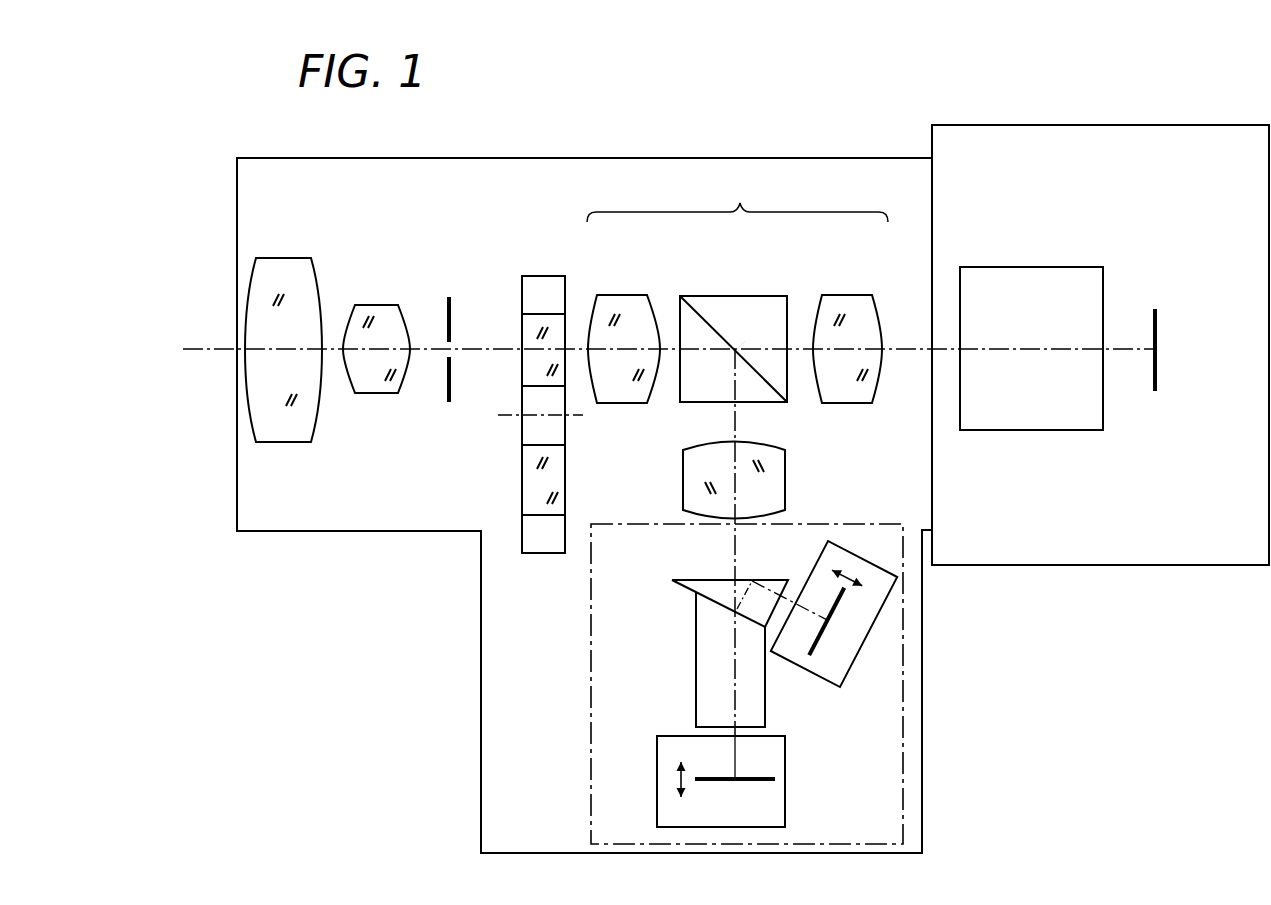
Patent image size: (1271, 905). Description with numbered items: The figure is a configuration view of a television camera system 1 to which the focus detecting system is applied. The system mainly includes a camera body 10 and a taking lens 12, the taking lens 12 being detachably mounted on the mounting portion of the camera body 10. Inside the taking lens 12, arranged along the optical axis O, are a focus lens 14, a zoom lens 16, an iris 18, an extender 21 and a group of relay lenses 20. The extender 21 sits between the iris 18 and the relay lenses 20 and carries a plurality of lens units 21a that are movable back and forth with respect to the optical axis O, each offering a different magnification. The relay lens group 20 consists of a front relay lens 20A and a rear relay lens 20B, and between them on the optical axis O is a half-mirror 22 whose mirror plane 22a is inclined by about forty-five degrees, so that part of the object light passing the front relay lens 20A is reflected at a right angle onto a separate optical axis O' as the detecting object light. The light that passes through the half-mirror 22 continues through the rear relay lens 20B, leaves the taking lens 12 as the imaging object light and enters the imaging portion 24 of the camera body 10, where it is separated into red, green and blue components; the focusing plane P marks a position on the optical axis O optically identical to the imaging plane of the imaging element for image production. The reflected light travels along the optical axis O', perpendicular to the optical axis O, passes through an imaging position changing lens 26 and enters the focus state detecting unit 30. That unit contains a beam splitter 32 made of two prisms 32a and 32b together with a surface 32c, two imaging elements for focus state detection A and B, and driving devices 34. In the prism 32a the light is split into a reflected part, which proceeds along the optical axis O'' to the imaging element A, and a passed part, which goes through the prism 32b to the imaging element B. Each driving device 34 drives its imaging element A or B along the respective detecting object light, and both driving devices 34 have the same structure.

The television camera system 1 is at (842, 120).
The camera body 10 is at (1105, 125).
The taking lens 12 is at (612, 158).
The focus lens 14 is at (285, 258).
The zoom lens 16 is at (372, 305).
The iris 18 is at (447, 306).
The relay lens 20 is at (737, 197).
The front relay lens 20A is at (621, 295).
The rear relay lens 20B is at (848, 295).
The extender 21 is at (543, 276).
The lens unit 21a is at (522, 333).
The half-mirror 22 is at (734, 296).
The mirror plane 22a is at (738, 347).
The imaging portion 24 is at (1033, 267).
The imaging position changing lens 26 is at (683, 470).
The focus state detecting unit 30 is at (591, 650).
The beam splitter 32 is at (696, 640).
The prism 32a is at (765, 580).
The prism 32b is at (696, 676).
The prism reflecting surface 32c is at (708, 597).
The driving device 34 is at (869, 561).
The imaging element for focus state detection A is at (810, 652).
The imaging element for focus state detection B is at (760, 782).
The optical axis O is at (665, 375).
The optical axis O' is at (779, 564).
The optical axis O'' is at (804, 551).
The focusing plane P is at (1158, 314).